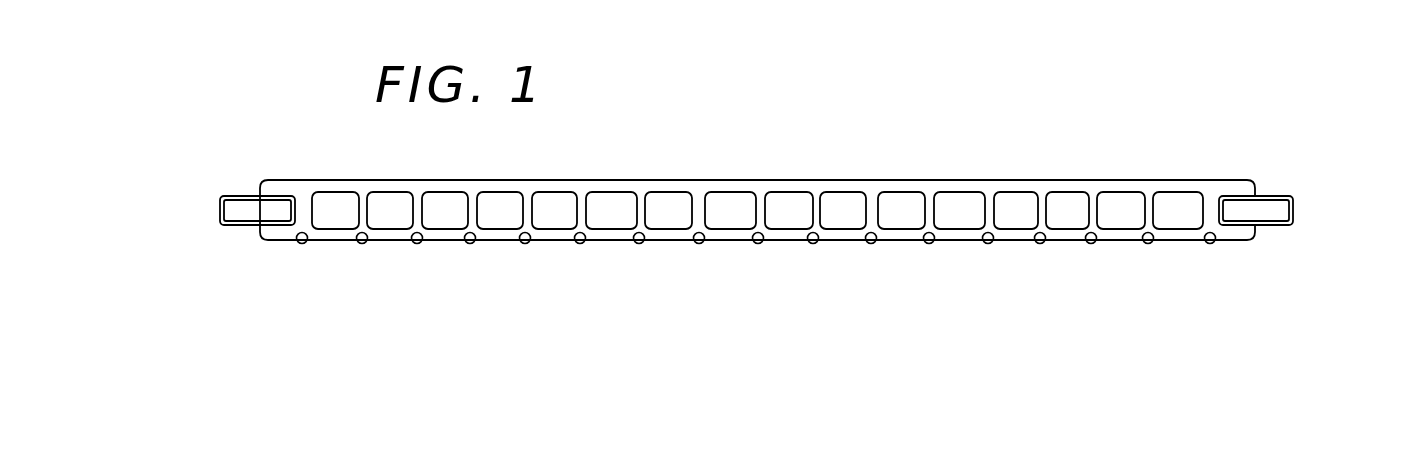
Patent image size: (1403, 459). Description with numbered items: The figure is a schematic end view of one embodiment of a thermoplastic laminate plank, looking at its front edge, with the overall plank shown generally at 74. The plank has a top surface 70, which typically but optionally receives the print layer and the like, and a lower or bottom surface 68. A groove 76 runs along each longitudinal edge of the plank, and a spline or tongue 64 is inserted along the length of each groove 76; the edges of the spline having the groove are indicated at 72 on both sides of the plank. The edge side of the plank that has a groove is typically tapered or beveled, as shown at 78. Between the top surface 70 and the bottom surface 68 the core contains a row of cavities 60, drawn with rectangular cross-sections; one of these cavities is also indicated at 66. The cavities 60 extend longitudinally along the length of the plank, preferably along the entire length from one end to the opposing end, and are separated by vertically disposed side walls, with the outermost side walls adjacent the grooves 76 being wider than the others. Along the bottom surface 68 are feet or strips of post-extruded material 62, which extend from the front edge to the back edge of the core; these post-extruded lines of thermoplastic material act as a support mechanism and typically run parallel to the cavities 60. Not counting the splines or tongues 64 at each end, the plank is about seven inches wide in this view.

The cavities 60 is at (1166, 207).
The feet or strips of post-extruded material 62 is at (1091, 244).
The spline or tongue 64 is at (1293, 225).
The cell opening 66 is at (985, 208).
The lower or bottom surface 68 is at (684, 257).
The top surface 70 is at (877, 163).
The edges of the spline having the groove 72 is at (232, 184).
The test strip body 74 is at (283, 310).
The groove 76 is at (1230, 224).
The tapered or beveled edge 78 is at (1256, 180).